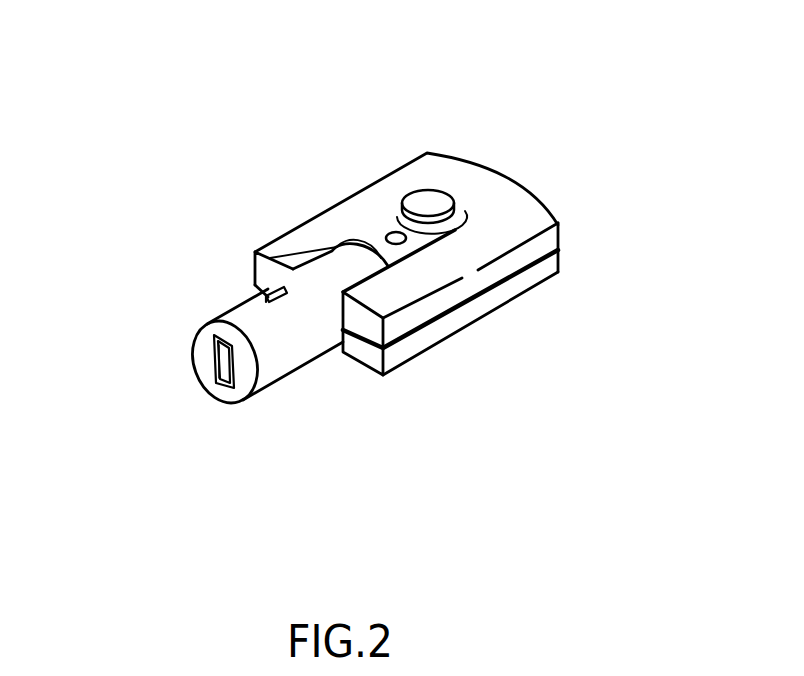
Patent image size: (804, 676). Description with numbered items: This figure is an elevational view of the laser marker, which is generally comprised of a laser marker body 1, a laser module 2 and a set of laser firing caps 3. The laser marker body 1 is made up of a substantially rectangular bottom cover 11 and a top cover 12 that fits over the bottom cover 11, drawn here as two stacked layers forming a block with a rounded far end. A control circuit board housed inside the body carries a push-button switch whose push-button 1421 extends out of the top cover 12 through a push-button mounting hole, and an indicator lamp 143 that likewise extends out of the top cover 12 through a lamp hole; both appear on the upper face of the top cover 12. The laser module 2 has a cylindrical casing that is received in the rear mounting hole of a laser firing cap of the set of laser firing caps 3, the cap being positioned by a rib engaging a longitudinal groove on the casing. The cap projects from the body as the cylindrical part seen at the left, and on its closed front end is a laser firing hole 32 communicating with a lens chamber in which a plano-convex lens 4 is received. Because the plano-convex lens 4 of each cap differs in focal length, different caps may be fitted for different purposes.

The laser marker body 1 is at (473, 328).
The bottom cover 11 is at (543, 270).
The top cover 12 is at (508, 183).
The push-button 1421 is at (435, 198).
The indicator lamp 143 is at (395, 232).
The laser module 2 is at (323, 335).
The set of laser firing caps 3 is at (265, 378).
The laser firing hole 32 is at (230, 387).
The plano-convex lens 4 is at (220, 358).